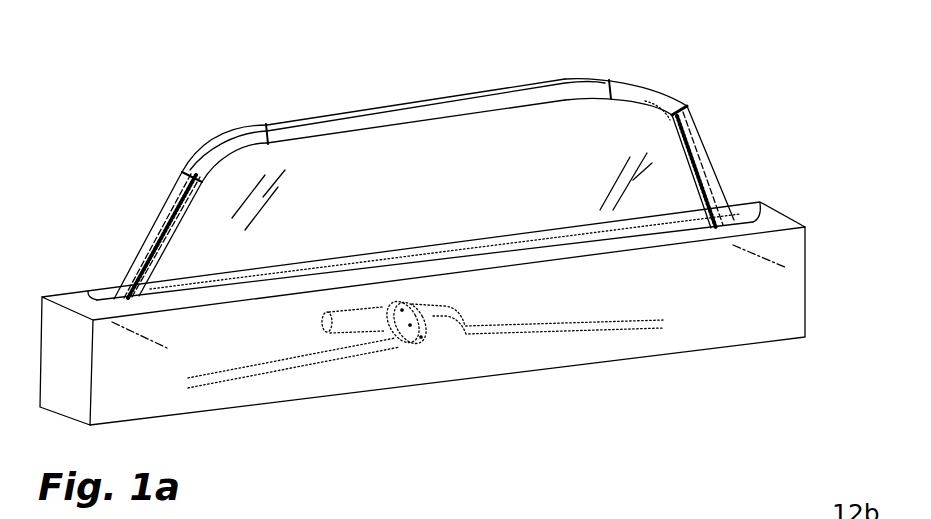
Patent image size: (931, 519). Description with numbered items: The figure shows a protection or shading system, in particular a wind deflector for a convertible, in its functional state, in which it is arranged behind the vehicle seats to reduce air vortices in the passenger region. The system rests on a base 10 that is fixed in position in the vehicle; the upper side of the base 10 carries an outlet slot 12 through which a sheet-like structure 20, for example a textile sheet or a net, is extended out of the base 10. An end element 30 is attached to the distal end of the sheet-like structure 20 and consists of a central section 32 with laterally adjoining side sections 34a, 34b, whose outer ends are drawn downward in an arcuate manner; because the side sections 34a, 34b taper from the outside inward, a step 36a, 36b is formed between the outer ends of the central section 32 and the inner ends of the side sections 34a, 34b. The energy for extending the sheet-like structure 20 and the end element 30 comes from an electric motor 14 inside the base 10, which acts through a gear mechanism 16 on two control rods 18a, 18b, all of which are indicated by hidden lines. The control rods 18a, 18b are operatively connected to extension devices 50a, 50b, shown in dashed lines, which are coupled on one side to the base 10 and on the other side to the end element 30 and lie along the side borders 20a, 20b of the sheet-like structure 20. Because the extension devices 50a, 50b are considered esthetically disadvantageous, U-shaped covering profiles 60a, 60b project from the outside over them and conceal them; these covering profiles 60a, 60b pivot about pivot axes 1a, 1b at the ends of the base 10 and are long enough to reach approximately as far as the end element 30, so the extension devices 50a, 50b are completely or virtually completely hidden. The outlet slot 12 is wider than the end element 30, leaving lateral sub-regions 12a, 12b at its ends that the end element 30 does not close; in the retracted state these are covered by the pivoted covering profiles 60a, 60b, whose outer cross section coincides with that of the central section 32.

The pivot axis 1a is at (123, 330).
The pivot axis 1b is at (767, 260).
The base 10 is at (310, 397).
The outlet slot 12 is at (493, 255).
The lateral sub-region of the outlet slot 12a is at (100, 300).
The lateral sub-region of the outlet slot 12b is at (745, 218).
The electric motor 14 is at (367, 320).
The gear mechanism 16 is at (392, 317).
The control rod 18a is at (218, 377).
The control rod 18b is at (650, 325).
The sheet-like structure 20 is at (453, 197).
The side border of the sheet-like structure 20a is at (141, 189).
The side border of the sheet-like structure 20b is at (732, 141).
The end element 30 is at (436, 159).
The central section 32 is at (463, 112).
The side section 34a is at (227, 134).
The side section 34b is at (633, 80).
The step 36a is at (264, 124).
The step 36b is at (605, 80).
The extension device 50a is at (167, 238).
The extension device 50b is at (695, 163).
The covering profile 60a is at (176, 181).
The covering profile 60b is at (695, 125).